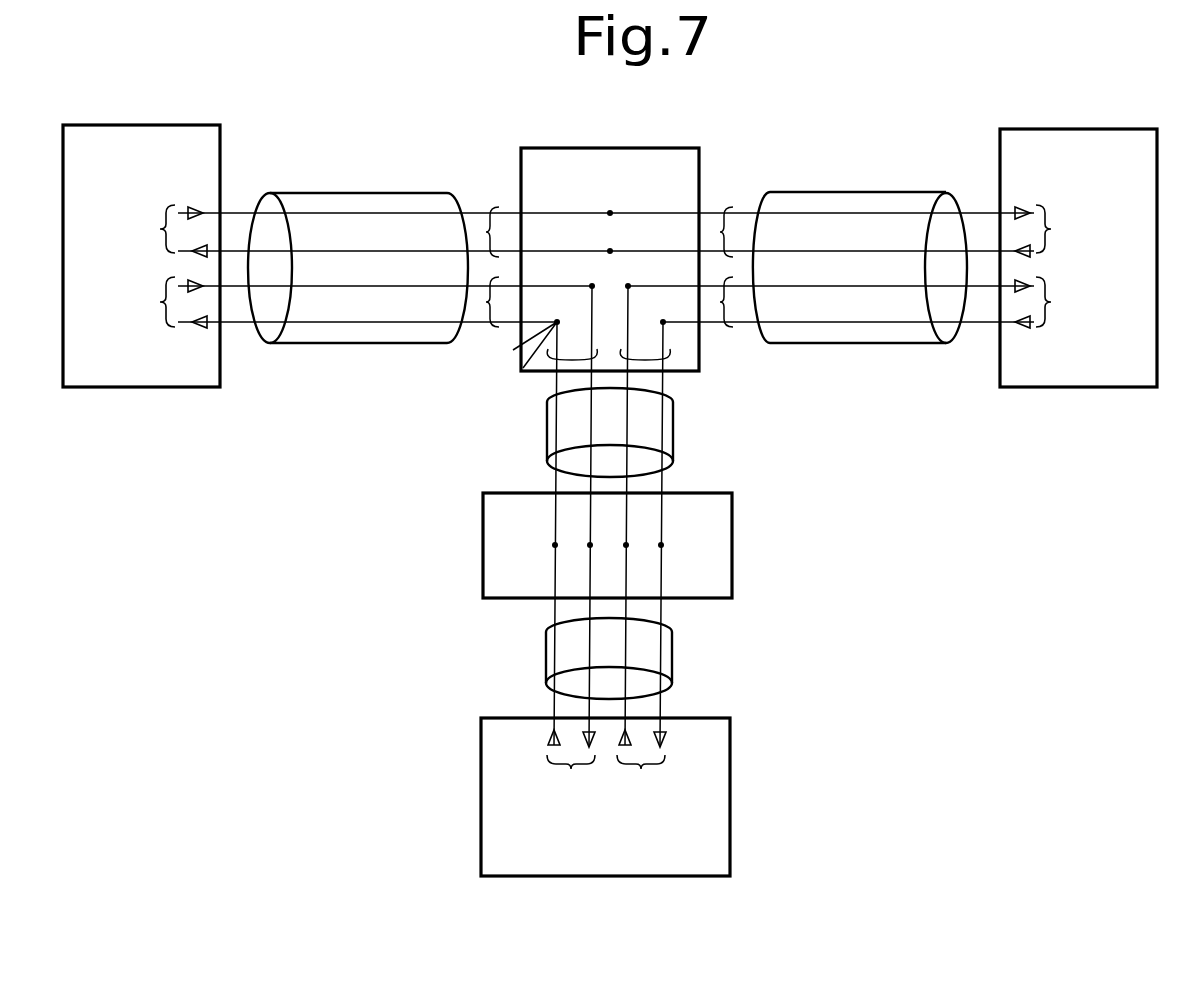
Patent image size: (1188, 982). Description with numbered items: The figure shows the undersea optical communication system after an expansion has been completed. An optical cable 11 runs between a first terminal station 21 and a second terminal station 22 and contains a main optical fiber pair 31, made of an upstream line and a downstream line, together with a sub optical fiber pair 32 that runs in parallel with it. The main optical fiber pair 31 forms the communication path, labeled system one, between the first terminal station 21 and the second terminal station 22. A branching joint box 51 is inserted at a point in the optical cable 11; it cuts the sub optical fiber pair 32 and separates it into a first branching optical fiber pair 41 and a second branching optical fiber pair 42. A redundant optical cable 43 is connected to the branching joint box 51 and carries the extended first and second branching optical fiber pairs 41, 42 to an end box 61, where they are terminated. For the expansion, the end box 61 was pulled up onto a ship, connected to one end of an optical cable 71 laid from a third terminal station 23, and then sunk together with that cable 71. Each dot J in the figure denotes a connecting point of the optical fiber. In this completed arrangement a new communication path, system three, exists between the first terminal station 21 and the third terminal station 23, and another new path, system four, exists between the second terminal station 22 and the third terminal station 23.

The optical cable 11 is at (378, 343).
The first terminal station 21 is at (122, 125).
The second terminal station 22 is at (1052, 129).
The third terminal station 23 is at (481, 752).
The main optical fiber pair 31 is at (495, 207).
The sub optical fiber pair 32 is at (495, 327).
The first branching optical fiber pair 41 is at (521, 372).
The second branching optical fiber pair 42 is at (672, 372).
The redundant optical cable 43 is at (674, 450).
The branching joint box 51 is at (619, 148).
The end box 61 is at (732, 531).
The optical cable 71 is at (672, 650).
The connecting point J is at (513, 350).